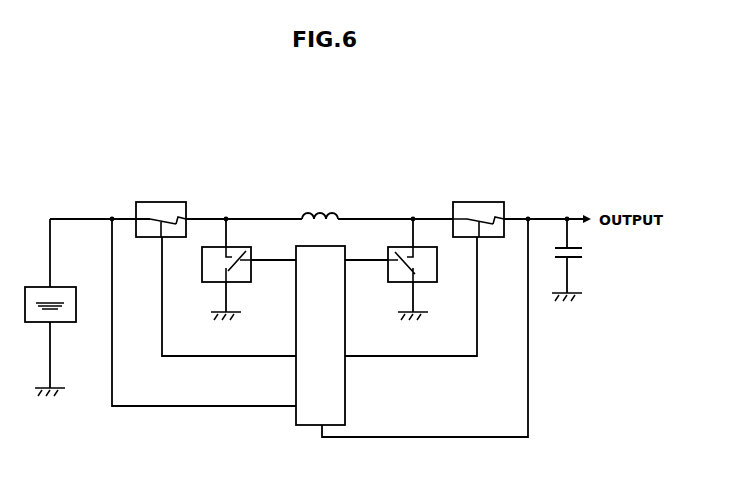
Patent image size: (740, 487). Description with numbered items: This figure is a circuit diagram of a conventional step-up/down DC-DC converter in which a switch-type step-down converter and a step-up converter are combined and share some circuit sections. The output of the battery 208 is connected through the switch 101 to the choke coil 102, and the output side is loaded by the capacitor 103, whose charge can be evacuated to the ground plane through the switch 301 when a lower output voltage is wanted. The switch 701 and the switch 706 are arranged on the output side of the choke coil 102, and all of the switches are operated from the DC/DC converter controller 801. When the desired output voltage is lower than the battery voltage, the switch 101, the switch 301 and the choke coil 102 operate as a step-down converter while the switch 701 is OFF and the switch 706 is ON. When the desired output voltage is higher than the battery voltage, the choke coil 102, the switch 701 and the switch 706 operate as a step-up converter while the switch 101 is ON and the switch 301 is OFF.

The switch 101 is at (160, 202).
The choke coil 102 is at (308, 212).
The capacitor 103 is at (582, 254).
The battery 208 is at (70, 322).
The switch 301 is at (202, 282).
The switch 701 is at (437, 274).
The switch 706 is at (476, 202).
The DC/DC converter controller 801 is at (296, 379).